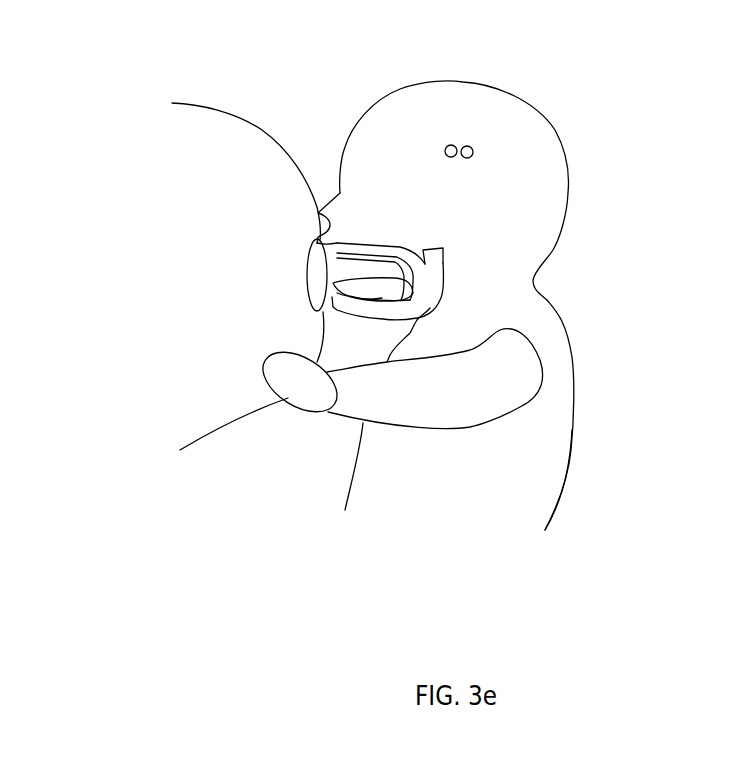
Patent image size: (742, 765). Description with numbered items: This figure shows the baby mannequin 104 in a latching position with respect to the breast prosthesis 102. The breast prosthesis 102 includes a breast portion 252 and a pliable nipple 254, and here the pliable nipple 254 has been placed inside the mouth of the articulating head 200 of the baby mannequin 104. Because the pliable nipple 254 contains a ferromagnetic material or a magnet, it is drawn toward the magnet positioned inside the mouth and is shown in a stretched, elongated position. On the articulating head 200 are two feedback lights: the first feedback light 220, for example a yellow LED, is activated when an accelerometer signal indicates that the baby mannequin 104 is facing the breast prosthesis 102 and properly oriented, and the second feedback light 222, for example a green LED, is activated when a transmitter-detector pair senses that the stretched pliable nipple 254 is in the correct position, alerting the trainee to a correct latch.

The breast prosthesis 102 is at (167, 94).
The baby mannequin 104 is at (415, 76).
The articulating head 200 is at (355, 100).
The first feedback light 220 is at (452, 143).
The second feedback light 222 is at (473, 150).
The breast portion 252 is at (203, 443).
The pliable nipple 254 is at (333, 267).